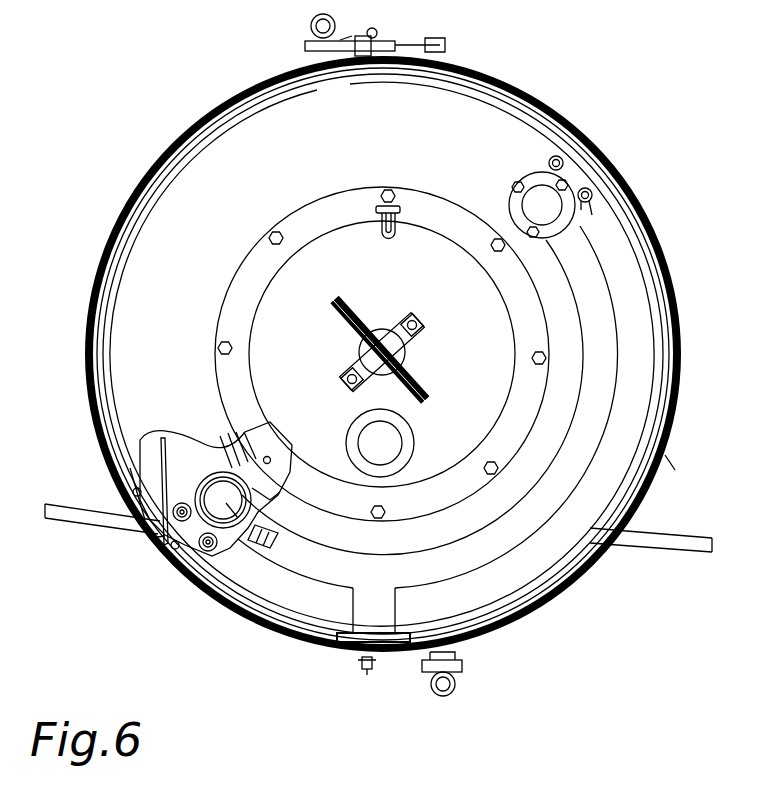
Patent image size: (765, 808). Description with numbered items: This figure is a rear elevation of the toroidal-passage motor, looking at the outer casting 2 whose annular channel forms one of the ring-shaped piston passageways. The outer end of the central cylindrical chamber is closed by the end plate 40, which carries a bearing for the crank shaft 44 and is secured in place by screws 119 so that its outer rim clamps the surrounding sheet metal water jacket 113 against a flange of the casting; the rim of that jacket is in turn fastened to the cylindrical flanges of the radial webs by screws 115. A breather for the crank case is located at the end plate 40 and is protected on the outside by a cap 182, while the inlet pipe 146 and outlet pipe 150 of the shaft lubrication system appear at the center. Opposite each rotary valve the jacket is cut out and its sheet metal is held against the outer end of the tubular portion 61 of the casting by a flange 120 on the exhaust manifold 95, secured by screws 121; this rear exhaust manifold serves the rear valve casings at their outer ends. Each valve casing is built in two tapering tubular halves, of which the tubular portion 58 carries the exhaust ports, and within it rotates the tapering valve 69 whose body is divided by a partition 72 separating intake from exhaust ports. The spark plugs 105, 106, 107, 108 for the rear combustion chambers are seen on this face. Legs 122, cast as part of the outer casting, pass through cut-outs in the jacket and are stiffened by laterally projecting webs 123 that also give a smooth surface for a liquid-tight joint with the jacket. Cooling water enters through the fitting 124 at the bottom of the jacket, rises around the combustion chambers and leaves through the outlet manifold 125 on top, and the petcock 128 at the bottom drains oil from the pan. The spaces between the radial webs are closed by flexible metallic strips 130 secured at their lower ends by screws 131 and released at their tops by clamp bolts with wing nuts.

The outer casting 2 is at (130, 466).
The end plate 40 is at (238, 289).
The crank shaft 44 is at (392, 442).
The tubular portion of valve casing 58 is at (268, 444).
The tubular portion of casting 61 is at (282, 490).
The tapering valve 69 is at (236, 506).
The partition 72 is at (270, 541).
The exhaust manifold 95 is at (581, 398).
The spark plug 105 is at (549, 160).
The spark plug 106 is at (589, 205).
The spark plug 107 is at (183, 502).
The spark plug 108 is at (216, 550).
The sheet metal water jacket 113 is at (172, 218).
The screw 115 is at (196, 584).
The screw 119 is at (272, 233).
The flange 120 is at (524, 180).
The screw 121 is at (541, 234).
The leg 122 is at (97, 528).
The laterally projecting web 123 is at (174, 540).
The lower hinge fitting 124 is at (457, 685).
The outlet manifold 125 is at (310, 24).
The petcock 128 is at (362, 667).
The flexible metallic strip 130 is at (84, 357).
The screw 131 is at (672, 468).
The inlet pipe 146 is at (430, 386).
The outlet pipe 150 is at (343, 320).
The cap 182 is at (370, 210).